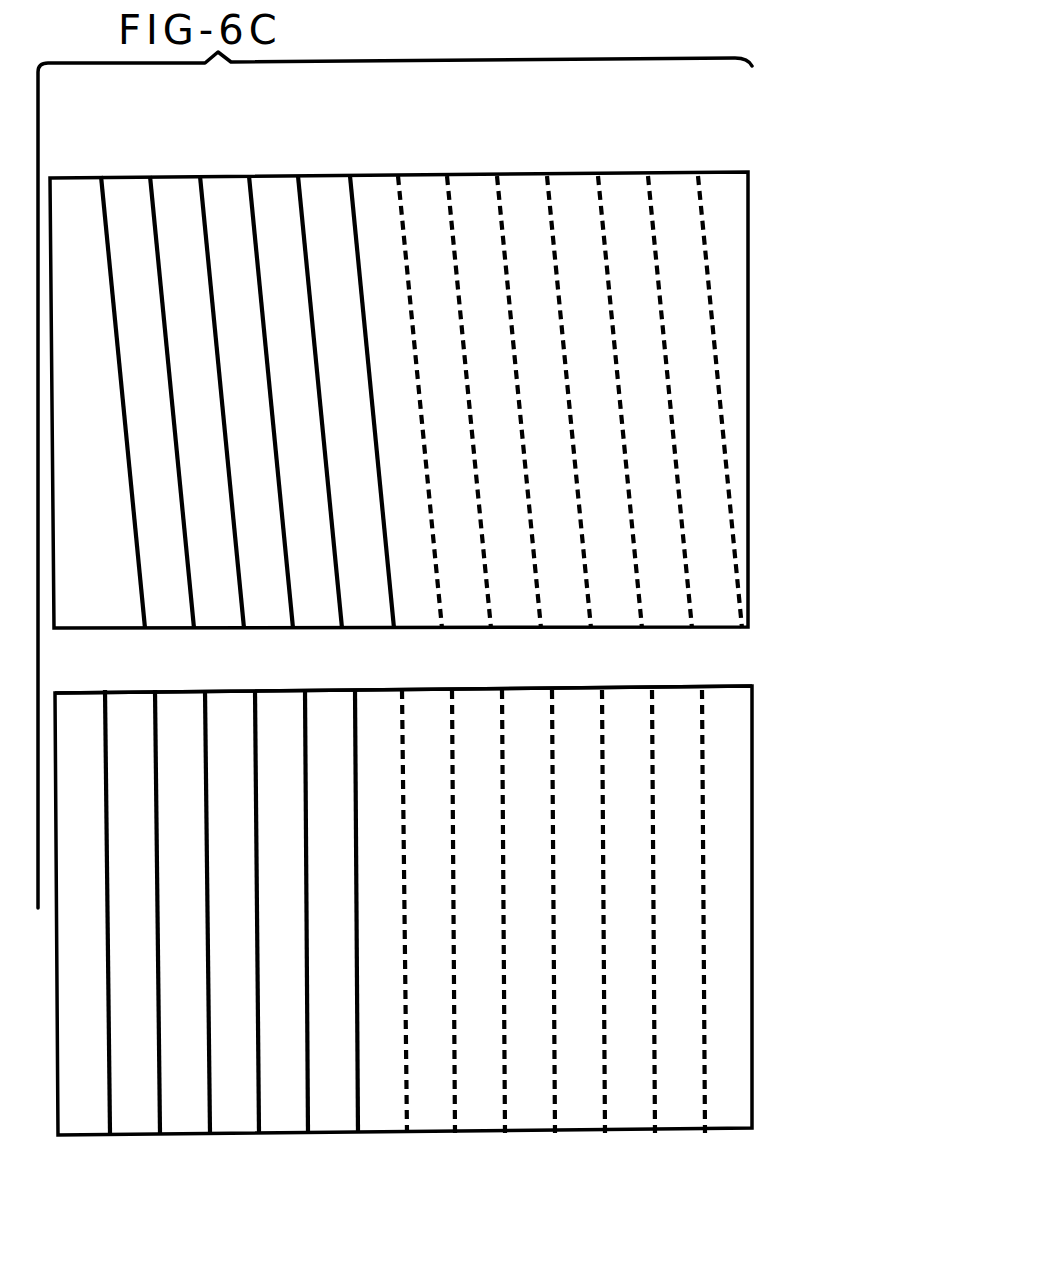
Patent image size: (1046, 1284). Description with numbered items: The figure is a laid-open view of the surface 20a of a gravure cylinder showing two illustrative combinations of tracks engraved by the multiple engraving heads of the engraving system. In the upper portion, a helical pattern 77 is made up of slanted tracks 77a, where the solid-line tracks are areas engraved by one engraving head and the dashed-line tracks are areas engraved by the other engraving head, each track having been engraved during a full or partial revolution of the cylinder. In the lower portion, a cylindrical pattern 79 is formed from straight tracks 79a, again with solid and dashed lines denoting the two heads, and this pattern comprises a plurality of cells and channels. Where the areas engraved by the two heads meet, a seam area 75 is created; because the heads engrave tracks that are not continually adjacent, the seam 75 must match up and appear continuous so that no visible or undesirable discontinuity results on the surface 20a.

The surface of cylinder 20a is at (737, 258).
The helical pattern 77 is at (760, 410).
The tracks of helical pattern 77a is at (310, 240).
The seam area 75 is at (372, 687).
The cylindrical pattern 79 is at (768, 912).
The tracks of cylindrical pattern 79a is at (312, 1018).